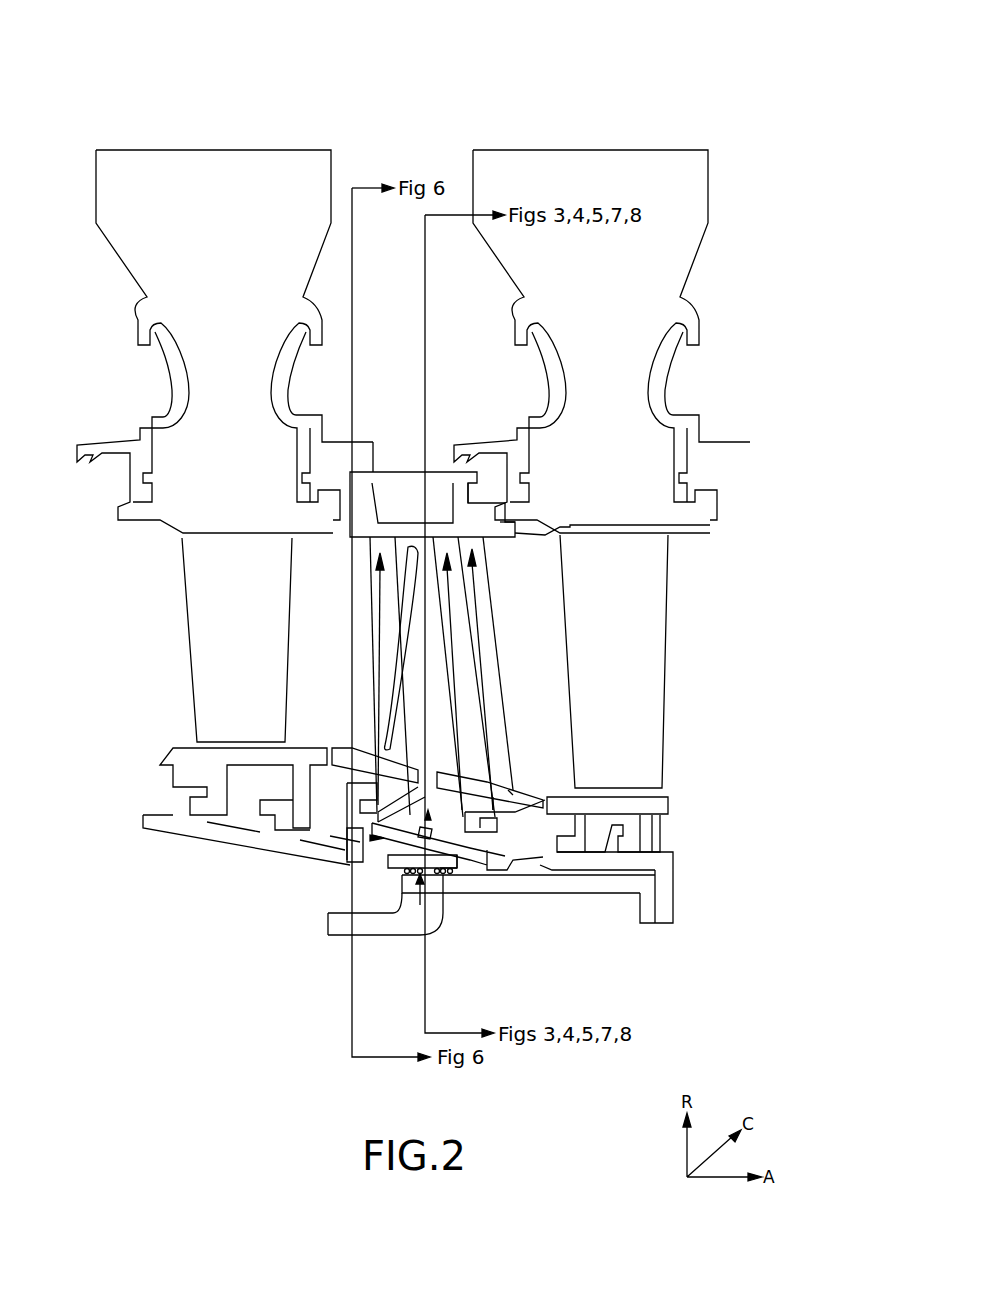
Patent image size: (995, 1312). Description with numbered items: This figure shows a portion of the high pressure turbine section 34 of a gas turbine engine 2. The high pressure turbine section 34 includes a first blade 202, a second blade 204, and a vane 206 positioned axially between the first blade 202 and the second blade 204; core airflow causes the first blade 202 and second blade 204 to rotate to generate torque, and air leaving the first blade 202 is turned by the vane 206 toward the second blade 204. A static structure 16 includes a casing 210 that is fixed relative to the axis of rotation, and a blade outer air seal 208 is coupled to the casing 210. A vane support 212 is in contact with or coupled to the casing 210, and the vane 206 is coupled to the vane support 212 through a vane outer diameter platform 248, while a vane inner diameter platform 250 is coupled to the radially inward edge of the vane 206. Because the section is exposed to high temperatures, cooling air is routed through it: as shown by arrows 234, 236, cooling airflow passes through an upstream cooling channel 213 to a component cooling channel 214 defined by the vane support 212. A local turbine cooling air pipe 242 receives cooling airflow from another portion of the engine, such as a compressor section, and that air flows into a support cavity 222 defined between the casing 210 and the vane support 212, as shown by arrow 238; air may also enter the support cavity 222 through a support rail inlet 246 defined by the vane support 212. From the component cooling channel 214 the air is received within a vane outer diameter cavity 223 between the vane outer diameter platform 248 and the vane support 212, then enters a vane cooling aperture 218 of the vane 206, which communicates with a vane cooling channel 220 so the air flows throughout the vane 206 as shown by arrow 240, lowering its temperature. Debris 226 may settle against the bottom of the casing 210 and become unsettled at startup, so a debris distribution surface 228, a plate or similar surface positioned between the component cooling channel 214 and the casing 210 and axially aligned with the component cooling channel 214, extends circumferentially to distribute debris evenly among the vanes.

The gas turbine engine 2 is at (122, 34).
The high pressure turbine section 34 is at (86, 62).
The first blade 202 is at (198, 622).
The second blade 204 is at (658, 638).
The vane 206 is at (493, 603).
The blade outer air seal 208 is at (668, 803).
The casing 210 is at (602, 885).
The vane support 212 is at (493, 837).
The upstream cooling channel 213 is at (333, 808).
The component cooling channel 214 is at (468, 868).
The static structure 16 is at (627, 885).
The vane cooling aperture 218 is at (427, 777).
The vane cooling channel 220 is at (422, 737).
The support cavity 222 is at (455, 873).
The vane outer diameter cavity 223 is at (407, 785).
The debris 226 is at (455, 872).
The debris distribution surface 228 is at (370, 870).
The arrow 234 is at (333, 837).
The arrow 236 is at (327, 837).
The arrow 238 is at (425, 905).
The arrow 240 is at (373, 615).
The local turbine cooling air pipe 242 is at (347, 930).
The support rail inlet 246 is at (340, 848).
The vane outer diameter platform 248 is at (513, 790).
The vane inner diameter platform 250 is at (500, 528).